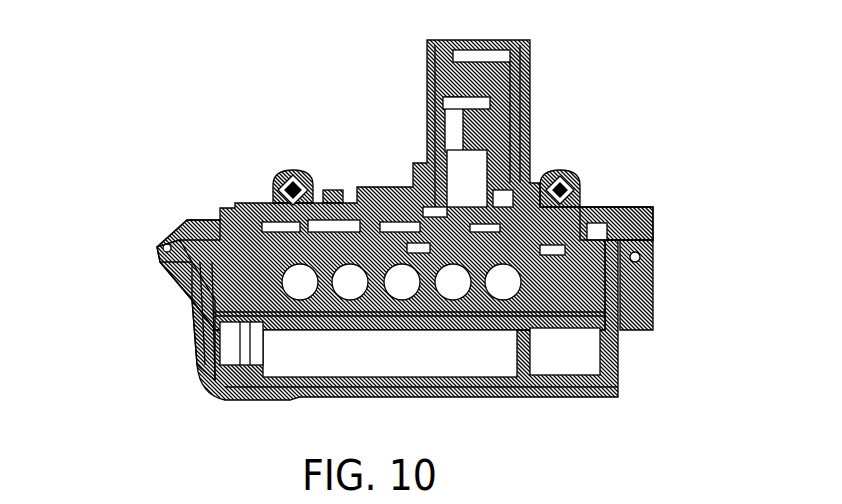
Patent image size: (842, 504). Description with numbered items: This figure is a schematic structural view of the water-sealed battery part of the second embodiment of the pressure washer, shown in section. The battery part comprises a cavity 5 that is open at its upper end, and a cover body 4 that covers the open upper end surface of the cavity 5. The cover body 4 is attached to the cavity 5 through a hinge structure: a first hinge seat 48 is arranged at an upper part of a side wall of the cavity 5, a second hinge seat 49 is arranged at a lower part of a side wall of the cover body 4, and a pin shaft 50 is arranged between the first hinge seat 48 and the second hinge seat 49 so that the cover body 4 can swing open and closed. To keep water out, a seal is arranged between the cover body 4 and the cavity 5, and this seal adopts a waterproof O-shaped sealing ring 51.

The cover body 4 is at (233, 205).
The cavity 5 is at (218, 388).
The first hinge seat 48 is at (180, 277).
The second hinge seat 49 is at (177, 223).
The pin shaft 50 is at (153, 247).
The waterproof O-shaped sealing ring 51 is at (640, 218).